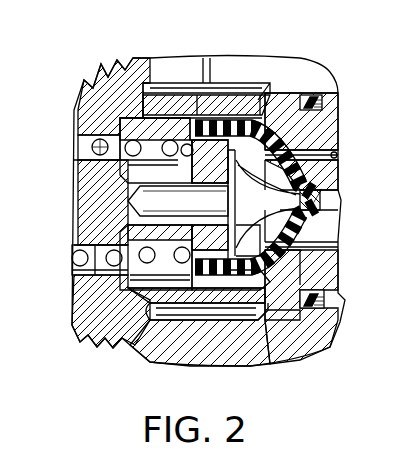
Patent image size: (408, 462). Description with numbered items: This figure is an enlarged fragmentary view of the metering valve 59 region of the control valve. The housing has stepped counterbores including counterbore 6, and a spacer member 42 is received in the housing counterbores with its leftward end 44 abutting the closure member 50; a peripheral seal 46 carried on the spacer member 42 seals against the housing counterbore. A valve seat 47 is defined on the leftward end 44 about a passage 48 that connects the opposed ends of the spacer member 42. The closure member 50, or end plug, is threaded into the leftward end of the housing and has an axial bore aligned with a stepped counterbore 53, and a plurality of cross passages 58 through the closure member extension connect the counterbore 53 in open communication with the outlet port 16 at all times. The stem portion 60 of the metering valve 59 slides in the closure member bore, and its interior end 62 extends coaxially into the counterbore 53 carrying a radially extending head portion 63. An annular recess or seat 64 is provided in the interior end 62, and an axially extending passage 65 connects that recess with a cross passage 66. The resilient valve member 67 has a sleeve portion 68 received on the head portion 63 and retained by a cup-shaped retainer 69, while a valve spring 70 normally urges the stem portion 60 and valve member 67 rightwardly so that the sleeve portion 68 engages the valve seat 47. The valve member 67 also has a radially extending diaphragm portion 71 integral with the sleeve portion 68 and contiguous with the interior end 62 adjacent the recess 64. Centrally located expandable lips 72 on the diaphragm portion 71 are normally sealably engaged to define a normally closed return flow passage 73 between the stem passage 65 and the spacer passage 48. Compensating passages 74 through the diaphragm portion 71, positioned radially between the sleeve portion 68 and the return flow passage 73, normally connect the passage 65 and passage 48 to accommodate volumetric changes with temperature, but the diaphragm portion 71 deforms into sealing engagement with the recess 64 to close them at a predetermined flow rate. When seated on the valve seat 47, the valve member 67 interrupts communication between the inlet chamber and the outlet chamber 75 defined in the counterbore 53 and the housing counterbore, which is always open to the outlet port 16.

The counterbore 6 is at (338, 300).
The outlet port 16 is at (228, 66).
The spacer member 42 is at (328, 266).
The leftward end 44 is at (296, 310).
The peripheral seal 46 is at (323, 100).
The valve seat 47 is at (270, 146).
The passage 48 is at (336, 154).
The closure member 50 is at (83, 110).
The stepped counterbore 53 is at (137, 113).
The cross passages 58 is at (173, 303).
The metering valve 59 is at (78, 179).
The stem portion 60 is at (106, 205).
The interior end 62 is at (213, 174).
The head portion 63 is at (231, 257).
The annular recess 64 is at (227, 197).
The axially extending passage 65 is at (158, 213).
The cross passage 66 is at (180, 127).
The resilient valve member 67 is at (270, 266).
The sleeve portion 68 is at (220, 280).
The cup-shaped retainer 69 is at (176, 269).
The valve spring 70 is at (74, 259).
The diaphragm portion 71 is at (253, 258).
The expandable lips 72 is at (320, 198).
The return flow passage 73 is at (268, 222).
The compensating passages 74 is at (262, 155).
The outlet chamber 75 is at (130, 277).